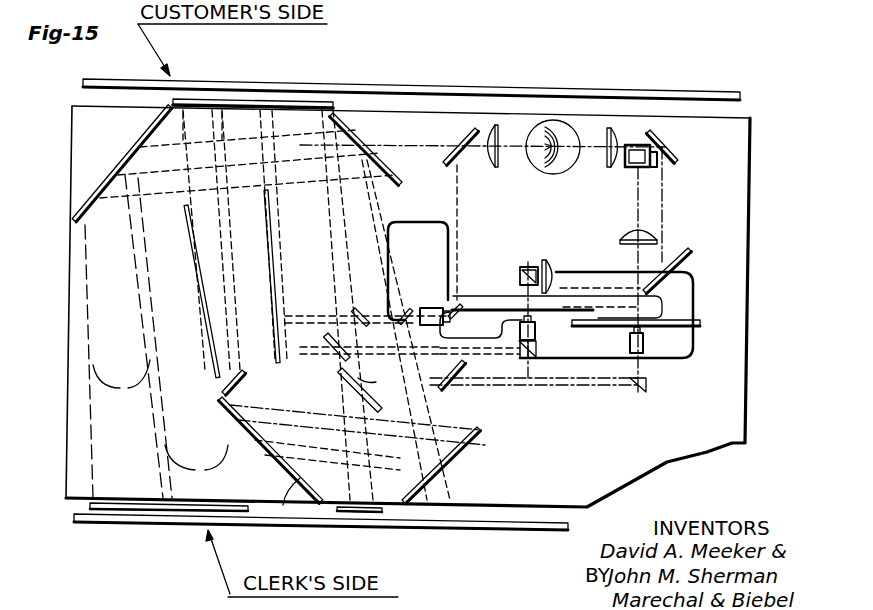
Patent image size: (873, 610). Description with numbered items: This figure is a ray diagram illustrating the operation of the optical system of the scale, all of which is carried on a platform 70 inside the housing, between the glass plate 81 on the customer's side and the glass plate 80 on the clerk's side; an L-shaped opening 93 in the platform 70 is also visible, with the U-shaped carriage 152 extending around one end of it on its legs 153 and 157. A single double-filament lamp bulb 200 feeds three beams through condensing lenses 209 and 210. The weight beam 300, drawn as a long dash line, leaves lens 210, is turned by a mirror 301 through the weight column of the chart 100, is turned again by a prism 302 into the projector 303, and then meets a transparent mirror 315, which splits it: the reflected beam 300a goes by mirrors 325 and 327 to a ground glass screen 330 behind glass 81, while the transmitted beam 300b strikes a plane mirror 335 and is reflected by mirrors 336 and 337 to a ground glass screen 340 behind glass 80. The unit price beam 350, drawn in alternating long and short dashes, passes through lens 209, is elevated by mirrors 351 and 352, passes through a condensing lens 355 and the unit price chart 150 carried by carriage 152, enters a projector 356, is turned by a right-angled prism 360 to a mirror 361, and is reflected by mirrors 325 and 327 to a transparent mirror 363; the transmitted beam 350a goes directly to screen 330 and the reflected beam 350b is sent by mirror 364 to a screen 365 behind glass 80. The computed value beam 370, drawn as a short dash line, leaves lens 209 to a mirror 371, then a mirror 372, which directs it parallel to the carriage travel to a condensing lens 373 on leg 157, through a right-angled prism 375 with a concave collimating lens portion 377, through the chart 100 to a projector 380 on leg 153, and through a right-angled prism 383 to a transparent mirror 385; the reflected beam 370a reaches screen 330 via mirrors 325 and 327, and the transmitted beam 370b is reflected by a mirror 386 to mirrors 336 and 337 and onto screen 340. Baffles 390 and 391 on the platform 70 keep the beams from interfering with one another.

The platform 70 is at (82, 135).
The glass plate 80 is at (185, 522).
The glass plate 81 is at (142, 82).
The L-shaped opening 93 is at (438, 237).
The chart 100 is at (508, 308).
The chart 150 is at (700, 322).
The carriage 152 is at (690, 340).
The leg 153 is at (595, 360).
The leg 157 is at (598, 268).
The lamp bulb 200 is at (557, 128).
The condensing lens 209 is at (615, 140).
The condensing lens 210 is at (491, 128).
The light beam 300 is at (514, 140).
The beam 300a is at (262, 135).
The beam 300b is at (100, 195).
The mirror 301 is at (468, 133).
The prism 302 is at (458, 305).
The projector 303 is at (432, 308).
The transparent mirror 315 is at (405, 310).
The mirror 325 is at (468, 442).
The mirror 327 is at (300, 500).
The ground glass screen 330 is at (317, 100).
The plane mirror 335 is at (355, 312).
The mirror 336 is at (355, 128).
The mirror 337 is at (120, 165).
The ground glass screen 340 is at (110, 508).
The light beam 350 is at (638, 195).
The beam 350a is at (205, 135).
The beam 350b is at (350, 385).
The mirror 351 is at (658, 160).
The mirror 352 is at (632, 150).
The condensing lens 355 is at (632, 235).
The projector 356 is at (645, 345).
The right-angled prism 360 is at (640, 392).
The mirror 361 is at (450, 382).
The transparent mirror 363 is at (226, 374).
The mirror 364 is at (348, 388).
The screen 365 is at (365, 512).
The beam 370 is at (665, 200).
The beam 370a is at (253, 133).
The beam 370b is at (325, 305).
The mirror 371 is at (670, 148).
The mirror 372 is at (690, 250).
The condensing lens 373 is at (556, 262).
The right-angled prism 375 is at (525, 270).
The collimating lens portion 377 is at (537, 268).
The projector 380 is at (537, 330).
The right-angled prism 383 is at (533, 357).
The transparent mirror 385 is at (446, 333).
The mirror 386 is at (330, 342).
The baffle 390 is at (208, 305).
The baffle 391 is at (270, 250).